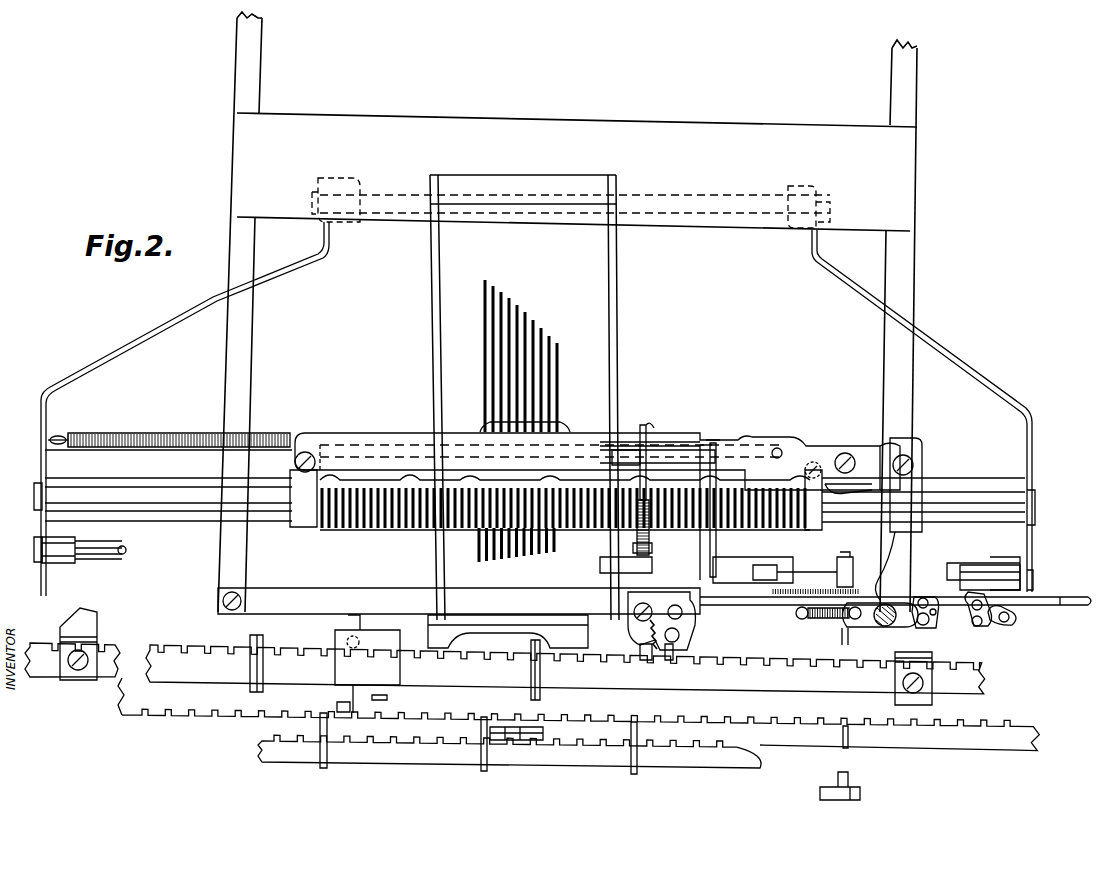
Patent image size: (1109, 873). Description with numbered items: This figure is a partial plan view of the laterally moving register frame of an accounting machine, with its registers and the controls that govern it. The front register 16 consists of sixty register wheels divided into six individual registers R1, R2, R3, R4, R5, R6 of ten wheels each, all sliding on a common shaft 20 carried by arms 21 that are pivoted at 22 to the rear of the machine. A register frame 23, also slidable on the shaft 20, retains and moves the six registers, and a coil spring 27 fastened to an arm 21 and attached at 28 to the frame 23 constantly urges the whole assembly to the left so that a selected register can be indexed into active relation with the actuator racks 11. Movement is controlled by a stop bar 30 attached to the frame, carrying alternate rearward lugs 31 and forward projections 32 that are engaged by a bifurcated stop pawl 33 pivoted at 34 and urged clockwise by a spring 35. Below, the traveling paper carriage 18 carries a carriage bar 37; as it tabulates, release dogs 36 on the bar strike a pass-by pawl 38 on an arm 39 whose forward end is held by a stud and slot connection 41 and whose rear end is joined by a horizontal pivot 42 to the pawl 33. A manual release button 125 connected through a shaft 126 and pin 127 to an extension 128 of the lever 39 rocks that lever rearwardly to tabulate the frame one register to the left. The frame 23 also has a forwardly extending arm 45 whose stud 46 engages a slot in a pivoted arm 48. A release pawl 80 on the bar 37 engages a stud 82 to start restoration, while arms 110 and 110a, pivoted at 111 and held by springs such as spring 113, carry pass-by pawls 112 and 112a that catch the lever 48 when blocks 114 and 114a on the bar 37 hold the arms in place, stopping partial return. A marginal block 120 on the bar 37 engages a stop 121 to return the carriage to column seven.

The pivot 22 is at (718, 198).
The arms 21 is at (295, 268).
The coil spring 27 is at (268, 440).
The common shaft 20 is at (143, 492).
The stop bar 30 is at (360, 444).
The rearward projections or lugs 31 is at (660, 442).
The spring attachment point 28 is at (776, 448).
The forward projections 32 is at (840, 488).
The forwardly extending arm 45 is at (918, 484).
The actuator racks 11 is at (532, 312).
The front register 16 is at (360, 528).
The individual register R1 is at (350, 465).
The individual register R2 is at (442, 465).
The individual register R3 is at (518, 466).
The individual register R4 is at (576, 465).
The individual register R5 is at (688, 478).
The individual register R6 is at (768, 475).
The register frame 23 is at (300, 522).
The stop pawl 33 is at (648, 428).
The pivot 34 is at (616, 460).
The spring 35 is at (634, 548).
The horizontal pivot 42 is at (729, 443).
The arm (release lever) 39 is at (710, 548).
The extension 128 is at (748, 556).
The pin 127 is at (810, 570).
The stud 46 is at (904, 588).
The arm (lever) 48 is at (935, 585).
The release pawl 80 is at (760, 632).
The stud and slot connection 41 is at (634, 608).
The stud 82 is at (647, 657).
The pass-by pawl 38 is at (670, 657).
The spring 113 is at (824, 620).
The arm 110 is at (888, 624).
The pivot 111 is at (884, 626).
The pass-by pawl 112 is at (927, 624).
The arm 110a is at (968, 624).
The pass-by pawl 112a is at (998, 622).
The stop 121 is at (455, 624).
The marginal block 120 is at (390, 664).
The carriage bar 37 is at (132, 656).
The release dogs 36 is at (263, 668).
The block 114a is at (88, 622).
The block 114 is at (895, 672).
The traveling paper carriage 18 is at (765, 740).
The shaft 126 is at (848, 744).
The manual release button 125 is at (860, 792).